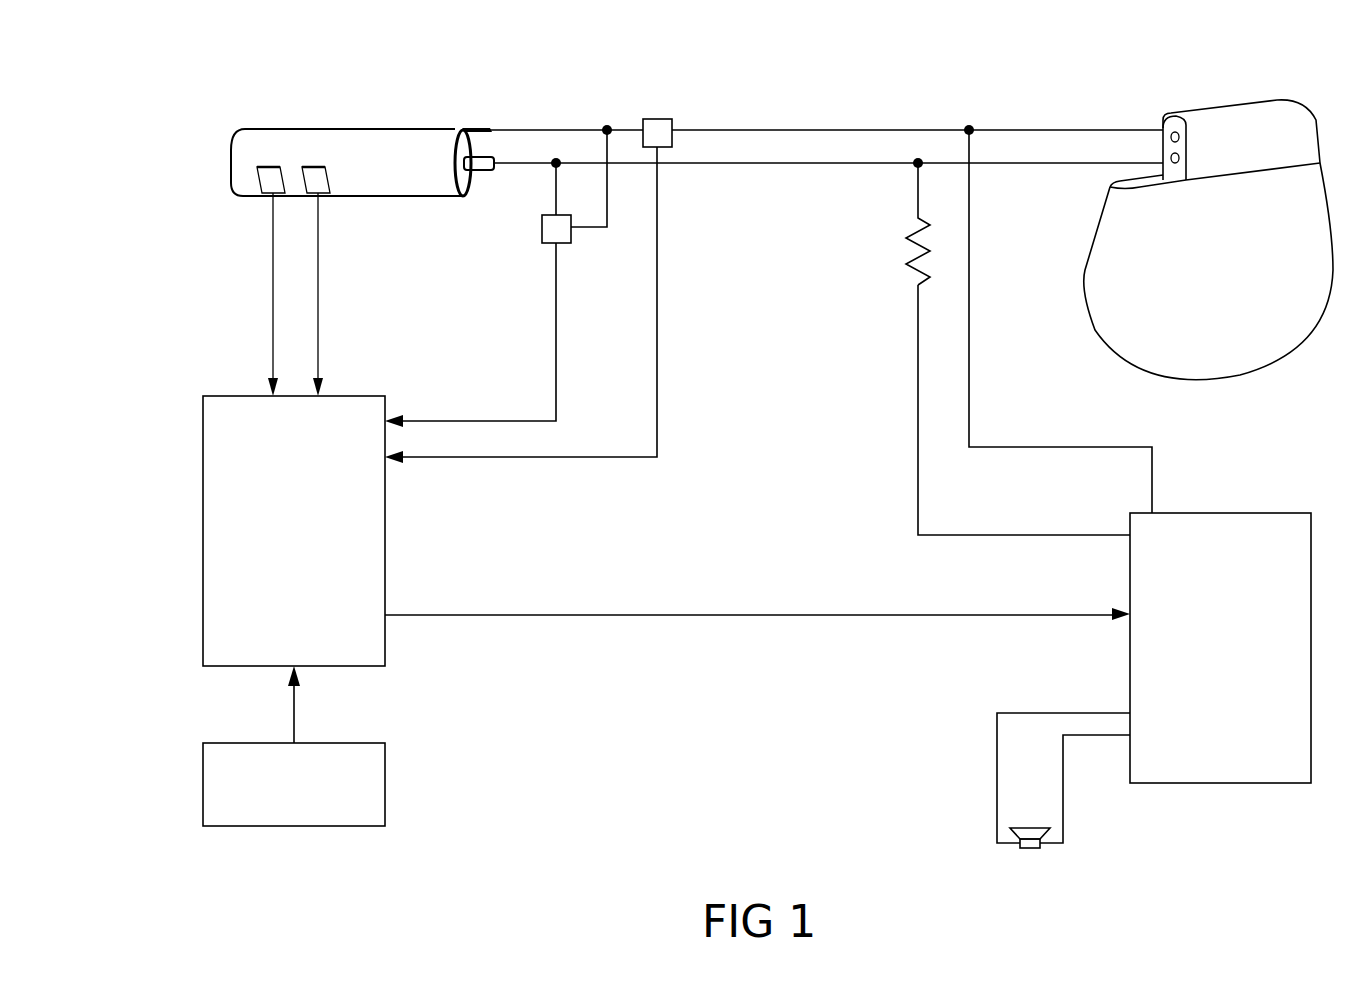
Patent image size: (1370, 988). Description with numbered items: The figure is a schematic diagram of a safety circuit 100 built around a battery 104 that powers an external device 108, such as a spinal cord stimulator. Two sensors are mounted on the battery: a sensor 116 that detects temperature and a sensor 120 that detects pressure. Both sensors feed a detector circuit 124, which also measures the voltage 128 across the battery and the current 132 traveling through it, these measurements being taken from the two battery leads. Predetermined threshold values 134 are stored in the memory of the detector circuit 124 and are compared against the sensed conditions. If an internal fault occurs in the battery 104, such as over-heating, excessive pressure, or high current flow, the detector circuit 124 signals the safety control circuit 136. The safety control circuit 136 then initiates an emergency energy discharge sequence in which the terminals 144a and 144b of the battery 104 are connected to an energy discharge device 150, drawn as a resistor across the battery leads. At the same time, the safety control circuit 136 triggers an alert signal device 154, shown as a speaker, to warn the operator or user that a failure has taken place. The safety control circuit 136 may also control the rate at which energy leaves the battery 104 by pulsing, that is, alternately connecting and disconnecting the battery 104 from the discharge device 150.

The safety circuit 100 is at (160, 78).
The battery 104 is at (360, 128).
The external device 108 is at (1218, 103).
The sensor 116 is at (262, 198).
The sensor 120 is at (331, 198).
The detector circuit 124 is at (203, 532).
The voltage 128 is at (541, 239).
The current 132 is at (659, 118).
The threshold values 134 is at (203, 783).
The safety control circuit 136 is at (1311, 649).
The terminal 144a is at (476, 127).
The terminal 144b is at (480, 171).
The energy discharge device 150 is at (896, 224).
The alert signal device 154 is at (1031, 849).